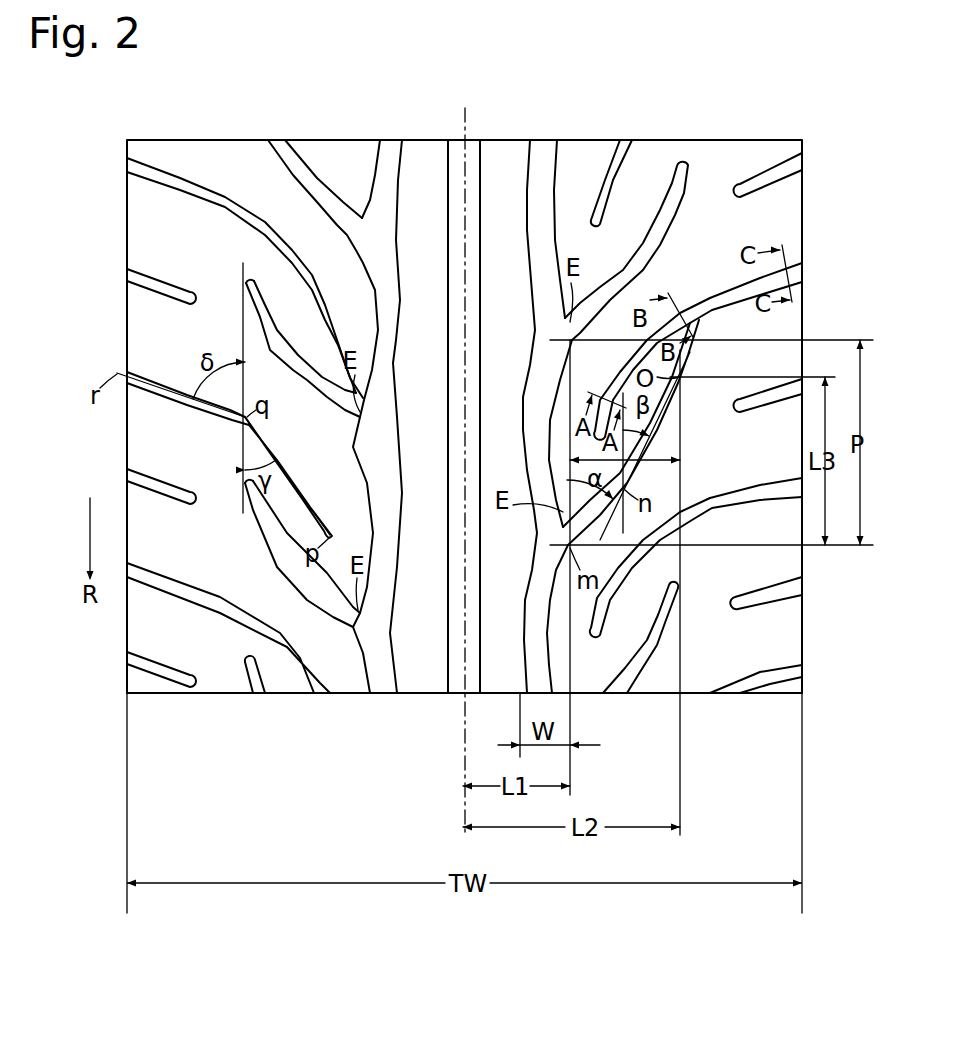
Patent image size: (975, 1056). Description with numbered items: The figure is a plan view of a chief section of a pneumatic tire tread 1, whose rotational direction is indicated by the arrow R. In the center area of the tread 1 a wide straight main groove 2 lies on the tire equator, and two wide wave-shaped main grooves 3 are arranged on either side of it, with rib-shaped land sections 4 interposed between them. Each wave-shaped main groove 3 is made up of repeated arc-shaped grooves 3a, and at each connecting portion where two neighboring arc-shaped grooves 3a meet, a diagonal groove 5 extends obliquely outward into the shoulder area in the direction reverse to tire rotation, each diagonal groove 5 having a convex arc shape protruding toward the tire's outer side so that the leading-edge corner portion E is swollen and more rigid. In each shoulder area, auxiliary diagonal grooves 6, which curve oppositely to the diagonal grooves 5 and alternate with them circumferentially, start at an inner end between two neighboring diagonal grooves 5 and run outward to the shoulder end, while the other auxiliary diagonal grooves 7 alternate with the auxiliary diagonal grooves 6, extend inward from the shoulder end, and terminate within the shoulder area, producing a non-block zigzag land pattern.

The tread 1 is at (805, 628).
The straight main groove 2 is at (477, 150).
The wave-shaped main groove 3 is at (430, 375).
The arc-shaped groove 3a is at (398, 332).
The rib-shaped land section 4 is at (432, 148).
The diagonal groove 5 is at (246, 279).
The auxiliary diagonal groove 6 is at (165, 374).
The auxiliary diagonal groove 7 is at (150, 470).